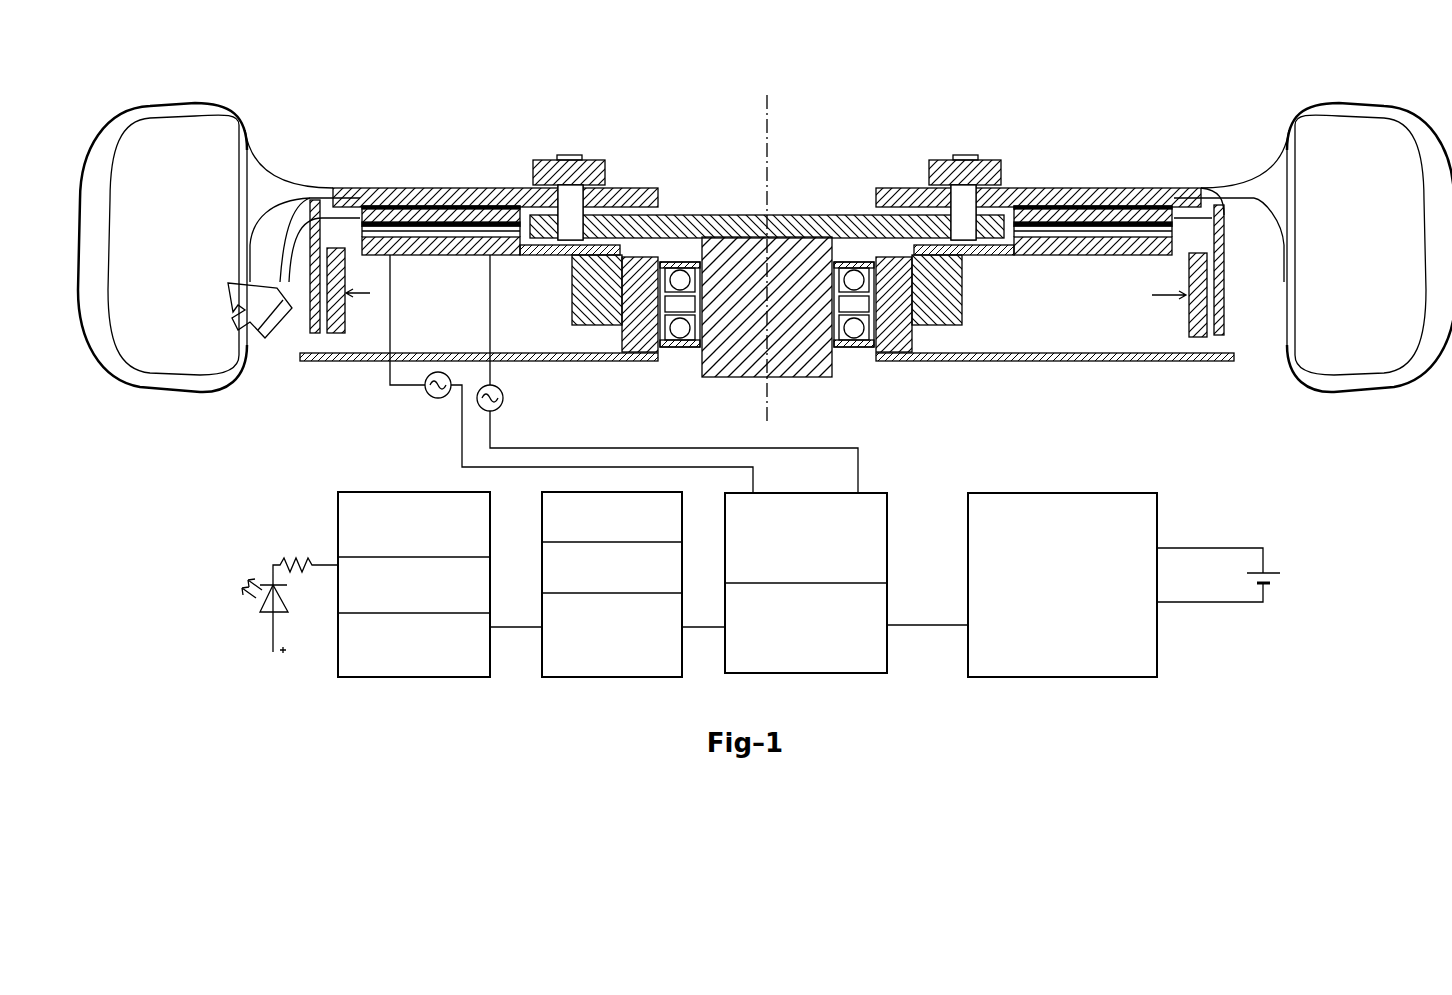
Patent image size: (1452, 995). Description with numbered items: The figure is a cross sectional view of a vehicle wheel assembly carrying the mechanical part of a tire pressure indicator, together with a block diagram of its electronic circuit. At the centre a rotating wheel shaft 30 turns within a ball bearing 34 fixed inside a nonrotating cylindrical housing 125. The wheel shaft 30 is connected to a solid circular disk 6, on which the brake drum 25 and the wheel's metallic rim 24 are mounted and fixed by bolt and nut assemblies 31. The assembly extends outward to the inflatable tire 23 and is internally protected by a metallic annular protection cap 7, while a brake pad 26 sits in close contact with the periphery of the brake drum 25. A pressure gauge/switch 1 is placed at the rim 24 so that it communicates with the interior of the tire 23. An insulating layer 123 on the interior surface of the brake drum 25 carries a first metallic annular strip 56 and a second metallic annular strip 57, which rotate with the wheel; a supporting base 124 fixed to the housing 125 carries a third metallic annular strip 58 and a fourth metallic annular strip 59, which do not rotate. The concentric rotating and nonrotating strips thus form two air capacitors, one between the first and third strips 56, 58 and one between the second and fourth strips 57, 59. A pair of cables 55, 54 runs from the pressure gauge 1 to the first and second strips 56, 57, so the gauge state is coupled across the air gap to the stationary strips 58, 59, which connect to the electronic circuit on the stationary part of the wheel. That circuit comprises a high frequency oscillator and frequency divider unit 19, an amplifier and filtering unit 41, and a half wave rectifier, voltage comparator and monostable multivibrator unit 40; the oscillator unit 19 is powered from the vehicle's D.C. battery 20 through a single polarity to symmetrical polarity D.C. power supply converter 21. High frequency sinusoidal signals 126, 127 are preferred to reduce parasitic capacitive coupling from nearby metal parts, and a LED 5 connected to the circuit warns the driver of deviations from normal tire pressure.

The pressure gauge/switch 1 is at (261, 335).
The LED 5 is at (289, 615).
The solid circular disk 6 is at (812, 218).
The metallic annular protection cap 7 is at (573, 362).
The high frequency oscillator and frequency divider unit 19 is at (811, 675).
The electric D.C. battery 20 is at (1233, 575).
The single polarity D.C. power supply to symmetrical polarity D.C. power supply conv 21 is at (1057, 676).
The inflatable tire 23 is at (135, 130).
The metallic rim 24 is at (253, 147).
The brake drum 25 is at (313, 334).
The brake pad 26 is at (337, 334).
The wheel shaft 30 is at (733, 378).
The bolt and nut assemblies 31 is at (569, 157).
The ball bearing 34 is at (680, 262).
The half wave rectifier, voltage comparator and monostable multivibrator unit 40 is at (398, 678).
The amplifier and filtering unit 41 is at (612, 678).
The cable 54 is at (280, 263).
The cable 55 is at (340, 226).
The first metallic annular strip 56 is at (372, 217).
The second metallic annular strip 57 is at (507, 246).
The third metallic annular strip 58 is at (357, 233).
The fourth metallic annular strip 59 is at (463, 235).
The insulating layer 123 is at (417, 208).
The supporting base 124 is at (523, 246).
The cylindrical housing 125 is at (641, 344).
The high frequency sinusoidal signal 126 is at (438, 397).
The high frequency sinusoidal signal 127 is at (507, 405).